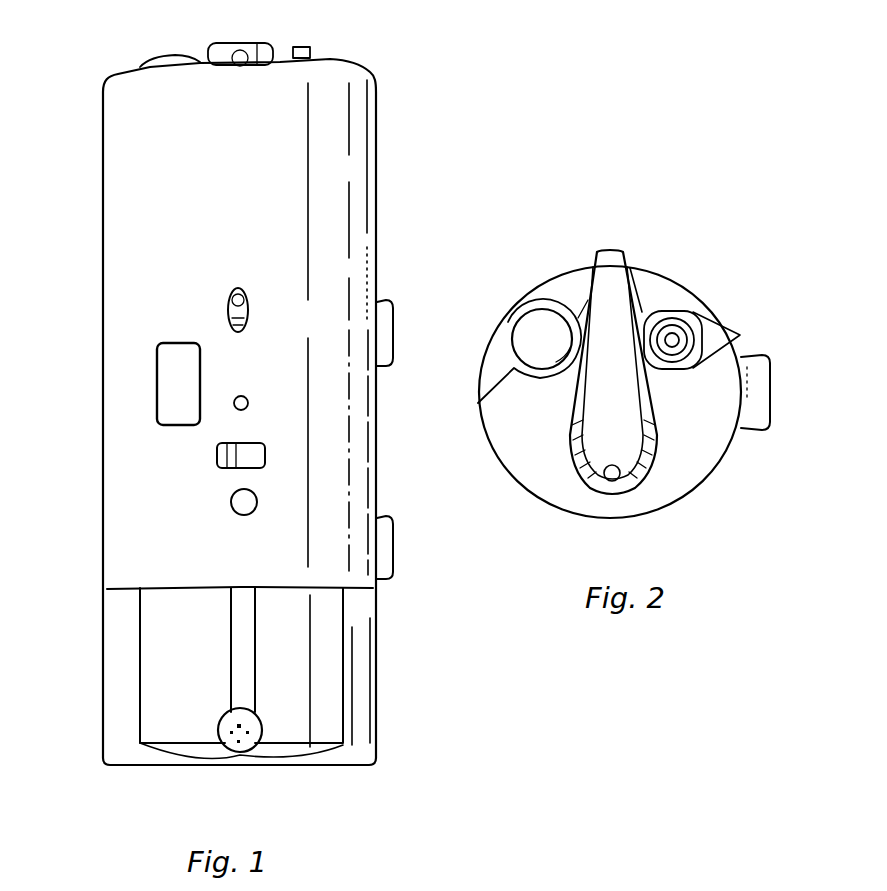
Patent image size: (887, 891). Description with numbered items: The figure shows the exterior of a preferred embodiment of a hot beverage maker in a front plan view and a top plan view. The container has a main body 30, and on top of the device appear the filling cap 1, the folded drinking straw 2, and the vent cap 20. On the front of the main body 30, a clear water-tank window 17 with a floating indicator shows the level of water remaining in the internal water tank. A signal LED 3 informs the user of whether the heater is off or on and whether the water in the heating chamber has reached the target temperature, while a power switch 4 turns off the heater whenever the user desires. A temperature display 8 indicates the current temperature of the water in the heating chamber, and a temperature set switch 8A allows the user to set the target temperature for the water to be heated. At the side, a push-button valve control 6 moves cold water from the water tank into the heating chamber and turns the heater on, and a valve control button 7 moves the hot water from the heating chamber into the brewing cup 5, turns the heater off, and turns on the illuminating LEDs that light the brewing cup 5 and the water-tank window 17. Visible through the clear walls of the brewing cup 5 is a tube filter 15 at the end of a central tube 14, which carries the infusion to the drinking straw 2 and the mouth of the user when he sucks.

In FIG. 1, the filling cap 1 is at (170, 53).
In FIG. 2, the filling cap 1 is at (543, 322).
In FIG. 1, the folded drinking straw 2 is at (257, 43).
In FIG. 2, the folded drinking straw 2 is at (600, 436).
In FIG. 1, the signal LED 3 is at (234, 405).
In FIG. 1, the power switch 4 is at (237, 498).
In FIG. 1, the brewing cup 5 is at (150, 688).
In FIG. 1, the push-button valve control 6 is at (382, 300).
In FIG. 1, the valve control button 7 is at (382, 517).
In FIG. 1, the temperature display 8 is at (157, 356).
In FIG. 1, the temperature set switch 8A is at (253, 455).
In FIG. 1, the central tube 14 is at (242, 660).
In FIG. 1, the tube filter 15 is at (265, 730).
In FIG. 1, the water-tank window 17 is at (228, 289).
In FIG. 1, the vent cap 20 is at (317, 60).
In FIG. 2, the vent cap 20 is at (673, 323).
In FIG. 1, the main body 30 is at (377, 170).